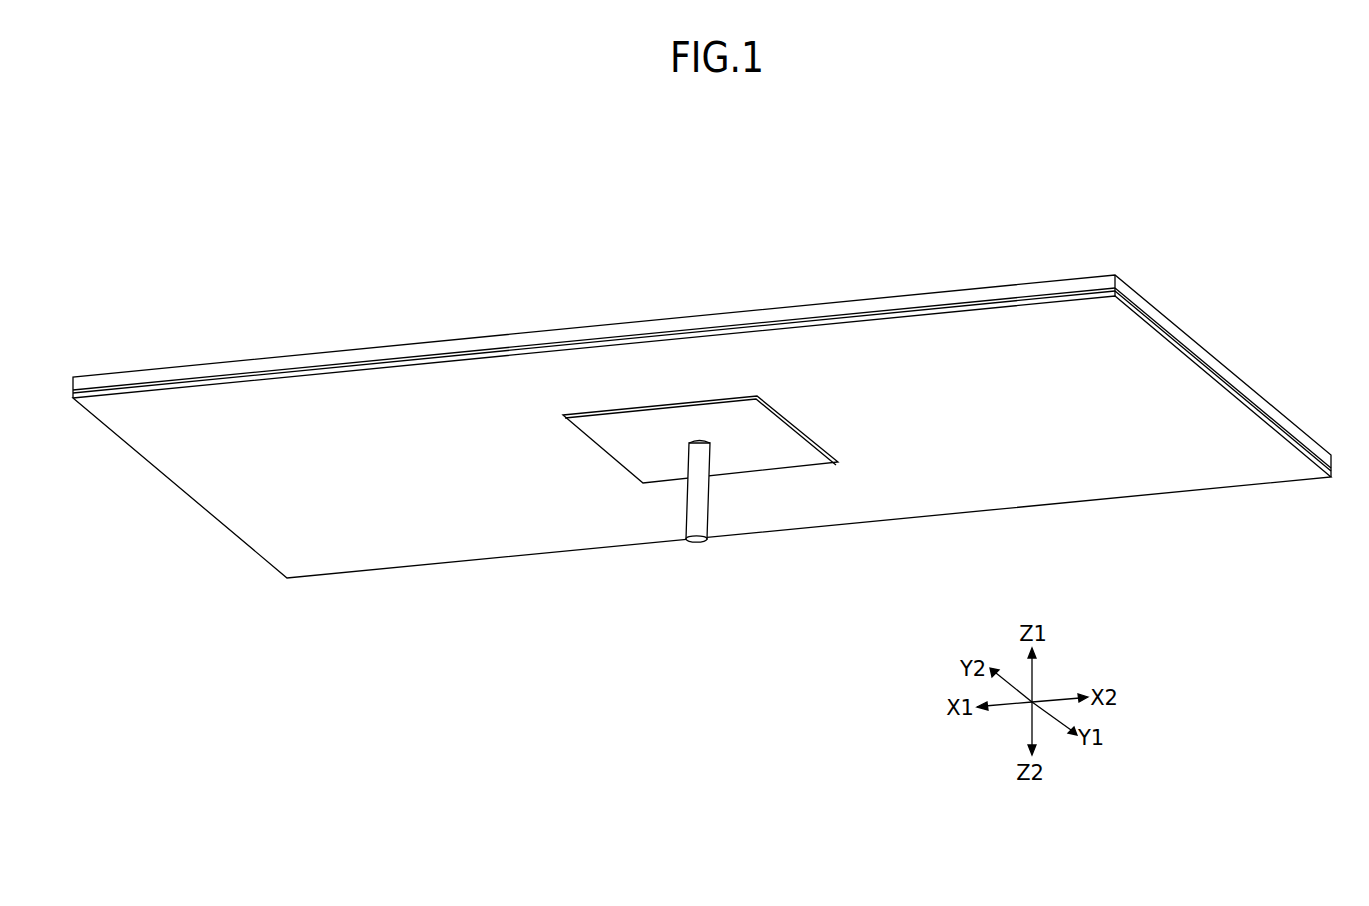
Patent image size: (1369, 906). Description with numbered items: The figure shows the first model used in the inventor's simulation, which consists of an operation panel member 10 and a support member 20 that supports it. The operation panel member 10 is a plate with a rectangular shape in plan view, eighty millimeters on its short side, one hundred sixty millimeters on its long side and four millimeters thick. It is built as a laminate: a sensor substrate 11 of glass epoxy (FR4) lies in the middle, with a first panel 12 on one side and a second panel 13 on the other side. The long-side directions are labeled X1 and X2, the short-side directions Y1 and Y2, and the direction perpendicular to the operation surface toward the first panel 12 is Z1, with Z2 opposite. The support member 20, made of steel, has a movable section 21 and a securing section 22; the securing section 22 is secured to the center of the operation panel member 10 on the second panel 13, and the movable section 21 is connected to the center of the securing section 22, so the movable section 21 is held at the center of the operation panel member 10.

The operation panel member 10 is at (702, 384).
The sensor substrate 11 is at (816, 320).
The first panel 12 is at (873, 309).
The second panel 13 is at (929, 274).
The support member 20 is at (700, 515).
The movable section 21 is at (700, 500).
The securing section 22 is at (778, 455).